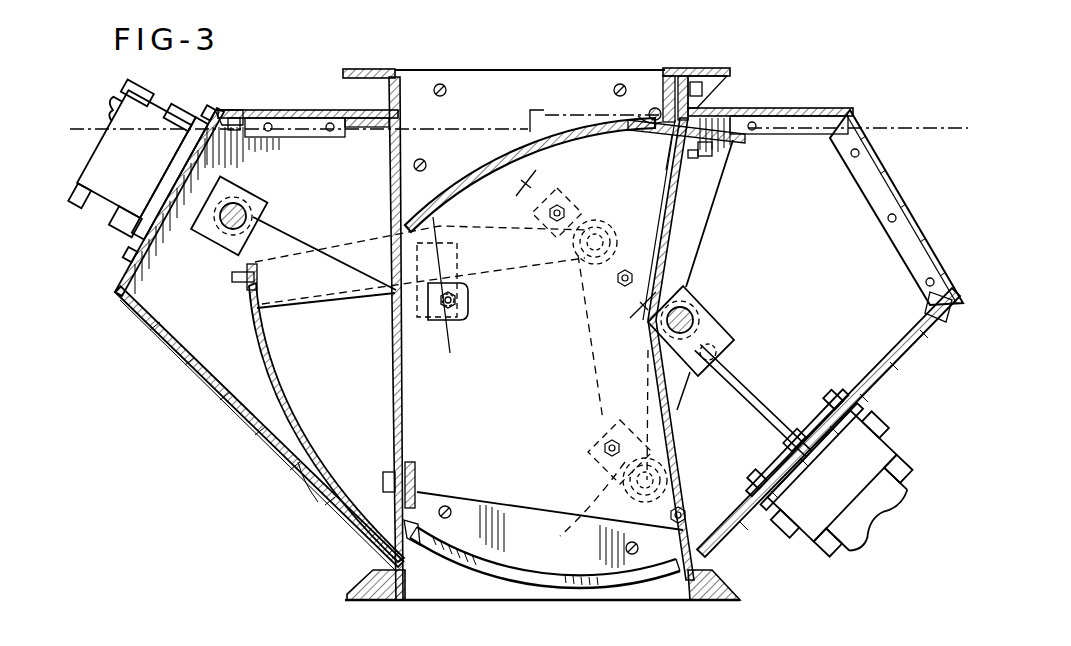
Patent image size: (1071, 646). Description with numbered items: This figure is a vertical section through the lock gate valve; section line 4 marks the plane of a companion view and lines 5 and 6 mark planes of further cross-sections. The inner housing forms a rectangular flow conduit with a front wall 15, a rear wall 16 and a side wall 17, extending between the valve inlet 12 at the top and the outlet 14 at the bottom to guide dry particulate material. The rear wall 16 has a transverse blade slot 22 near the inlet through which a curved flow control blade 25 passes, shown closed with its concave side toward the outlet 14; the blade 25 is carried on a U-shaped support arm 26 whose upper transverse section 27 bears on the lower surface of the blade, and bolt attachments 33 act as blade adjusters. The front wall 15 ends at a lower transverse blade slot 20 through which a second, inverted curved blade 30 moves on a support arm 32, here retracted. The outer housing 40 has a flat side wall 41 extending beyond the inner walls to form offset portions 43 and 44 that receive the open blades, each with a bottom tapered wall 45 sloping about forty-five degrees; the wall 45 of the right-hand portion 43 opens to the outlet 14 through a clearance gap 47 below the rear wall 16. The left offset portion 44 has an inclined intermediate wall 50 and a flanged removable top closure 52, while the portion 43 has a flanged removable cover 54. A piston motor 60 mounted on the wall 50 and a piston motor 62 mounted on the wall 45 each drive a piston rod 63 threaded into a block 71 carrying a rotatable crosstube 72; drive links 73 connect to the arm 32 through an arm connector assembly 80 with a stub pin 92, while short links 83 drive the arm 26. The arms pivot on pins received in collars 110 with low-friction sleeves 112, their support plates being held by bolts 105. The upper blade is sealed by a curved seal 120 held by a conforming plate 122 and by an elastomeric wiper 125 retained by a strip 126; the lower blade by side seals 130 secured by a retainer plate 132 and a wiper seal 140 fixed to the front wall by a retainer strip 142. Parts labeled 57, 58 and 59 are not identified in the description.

The section line 4- 4 is at (75, 160).
The section line 5- 5 is at (416, 223).
The section line 6- 6 is at (574, 260).
The valve inlet 12 is at (506, 80).
The outlet 14 is at (545, 602).
The front wall 15 is at (395, 400).
The rear wall 16 is at (669, 192).
The side wall 17 is at (506, 398).
The blade slot 20 is at (403, 540).
The blade slot 22 is at (665, 140).
The curved flow control blade 25 is at (585, 122).
The U-shaped support arm 26 is at (701, 233).
The upper transverse section 27 is at (720, 158).
The second curved flow-control blade 30 is at (282, 440).
The U-shaped support arm 32 is at (300, 306).
The bolt attachments 33 is at (724, 142).
The outer housing 40 is at (238, 430).
The side wall 41 is at (232, 375).
The offset portion 43 is at (876, 356).
The offset portion 44 is at (308, 470).
The bottom tapered wall 45 is at (182, 348).
The clearance gap 47 is at (693, 540).
The inclined intermediate wall 50 is at (125, 270).
The flanged removable top closure 52 is at (285, 112).
The flanged removable cover 54 is at (822, 108).
The bolt 57 is at (363, 118).
The top mounting bracket 58 is at (712, 68).
The left foot 59 is at (372, 605).
The piston motor 60 is at (123, 122).
The piston motor 62 is at (862, 500).
The piston rod 63 is at (762, 405).
The threaded block 71 is at (212, 232).
The crosstube 72 is at (245, 215).
The drive links 73 is at (328, 247).
The arm connector assembly 80 is at (474, 306).
The short links 83 is at (688, 385).
The stub pin 92 is at (614, 236).
The bolts 105 is at (598, 467).
The collars 110 is at (586, 200).
The sleeve 112 is at (590, 278).
The blade-conforming seal 120 is at (520, 96).
The conforming plate 122 is at (452, 82).
The elastomeric wiper 125 is at (654, 108).
The strip 126 is at (662, 95).
The blade-conforming side seals 130 is at (490, 565).
The retainer plate 132 is at (600, 560).
The blade wiper seal 140 is at (430, 528).
The retainer strip 142 is at (415, 478).